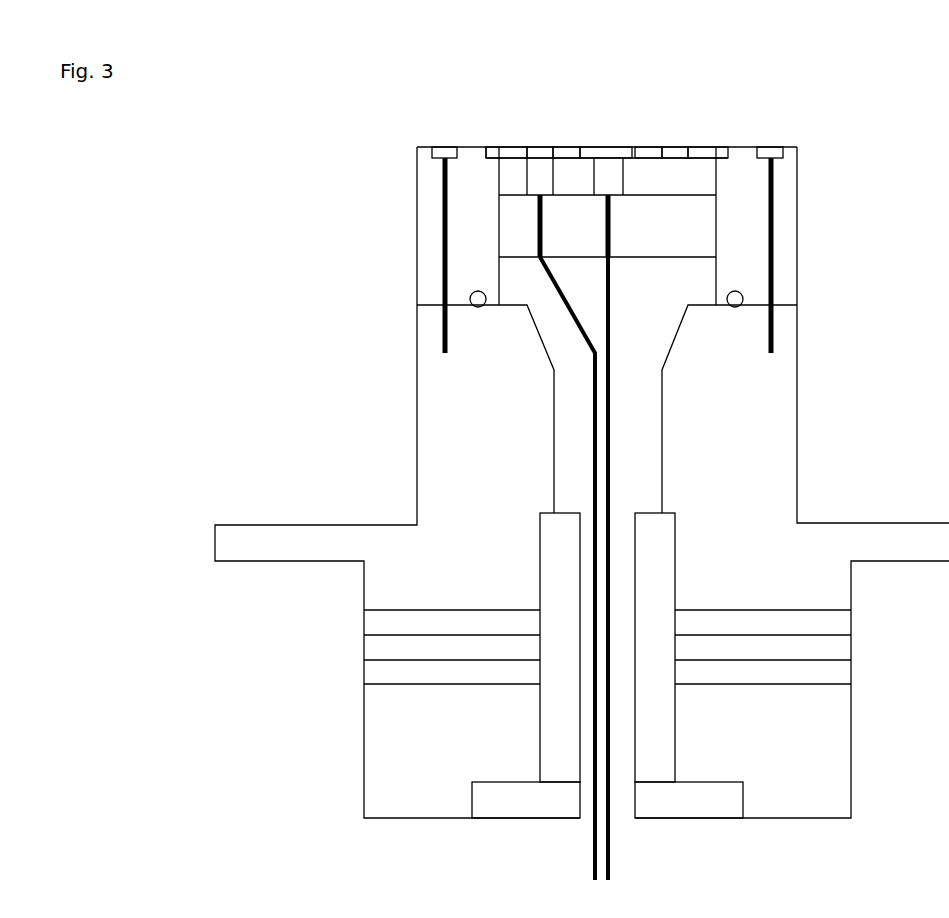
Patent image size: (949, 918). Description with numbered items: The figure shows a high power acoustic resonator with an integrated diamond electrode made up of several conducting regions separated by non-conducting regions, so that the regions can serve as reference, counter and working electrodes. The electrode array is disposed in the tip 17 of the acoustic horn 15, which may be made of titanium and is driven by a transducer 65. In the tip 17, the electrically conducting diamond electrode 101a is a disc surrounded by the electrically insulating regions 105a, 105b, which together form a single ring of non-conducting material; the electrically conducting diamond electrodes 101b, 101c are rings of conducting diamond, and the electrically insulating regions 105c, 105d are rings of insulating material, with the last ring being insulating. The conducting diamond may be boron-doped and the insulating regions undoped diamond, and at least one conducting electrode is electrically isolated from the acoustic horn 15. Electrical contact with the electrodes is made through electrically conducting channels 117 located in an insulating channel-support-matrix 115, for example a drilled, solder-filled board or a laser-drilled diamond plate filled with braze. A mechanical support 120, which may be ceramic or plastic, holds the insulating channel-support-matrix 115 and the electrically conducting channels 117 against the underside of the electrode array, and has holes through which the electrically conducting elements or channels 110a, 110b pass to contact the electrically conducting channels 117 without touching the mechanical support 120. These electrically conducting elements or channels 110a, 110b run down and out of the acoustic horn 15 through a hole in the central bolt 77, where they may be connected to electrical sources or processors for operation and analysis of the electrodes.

The acoustic horn 15 is at (493, 426).
The tip 17 is at (790, 147).
The transducer 65 is at (364, 673).
The central bolt 77 is at (472, 803).
The electrically conducting diamond electrode 101a is at (597, 147).
The electrically conducting diamond electrode 101b is at (537, 147).
The electrically conducting diamond electrode 101c is at (668, 147).
The electrically insulating region 105a is at (567, 147).
The electrically insulating region 105b is at (645, 147).
The electrically insulating region 105c is at (708, 147).
The electrically insulating region 105d is at (500, 146).
The electrically conducting element or channel 110a is at (565, 305).
The electrically conducting element or channel 110b is at (608, 283).
The insulating channel-support-matrix 115 is at (716, 180).
The electrically conducting channel 117 is at (527, 175).
The mechanical support 120 is at (716, 245).